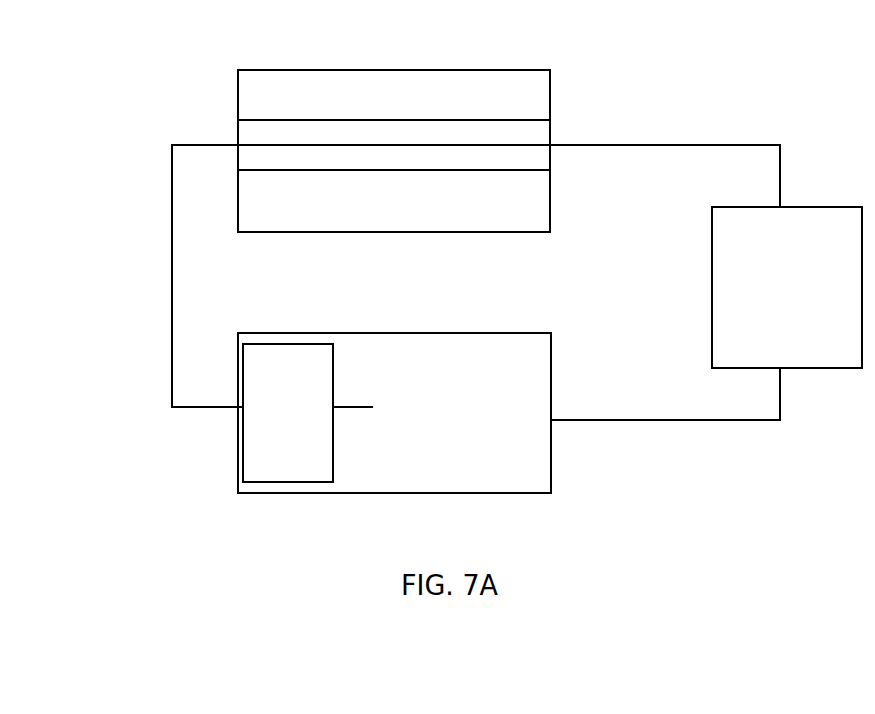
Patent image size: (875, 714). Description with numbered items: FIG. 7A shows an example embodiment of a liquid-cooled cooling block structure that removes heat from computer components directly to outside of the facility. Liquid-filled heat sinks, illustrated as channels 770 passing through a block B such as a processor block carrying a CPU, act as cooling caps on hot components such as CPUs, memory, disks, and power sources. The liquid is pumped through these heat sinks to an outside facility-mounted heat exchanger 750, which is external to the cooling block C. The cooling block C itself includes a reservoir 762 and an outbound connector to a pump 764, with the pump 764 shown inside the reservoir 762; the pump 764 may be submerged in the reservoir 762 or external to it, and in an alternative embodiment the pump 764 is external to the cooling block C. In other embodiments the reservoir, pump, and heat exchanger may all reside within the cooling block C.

The channels 770 is at (566, 119).
The heat exchanger 750 is at (806, 299).
The reservoir 762 is at (484, 419).
The pump 764 is at (309, 419).
The block B is at (311, 204).
The cooling block C is at (551, 457).